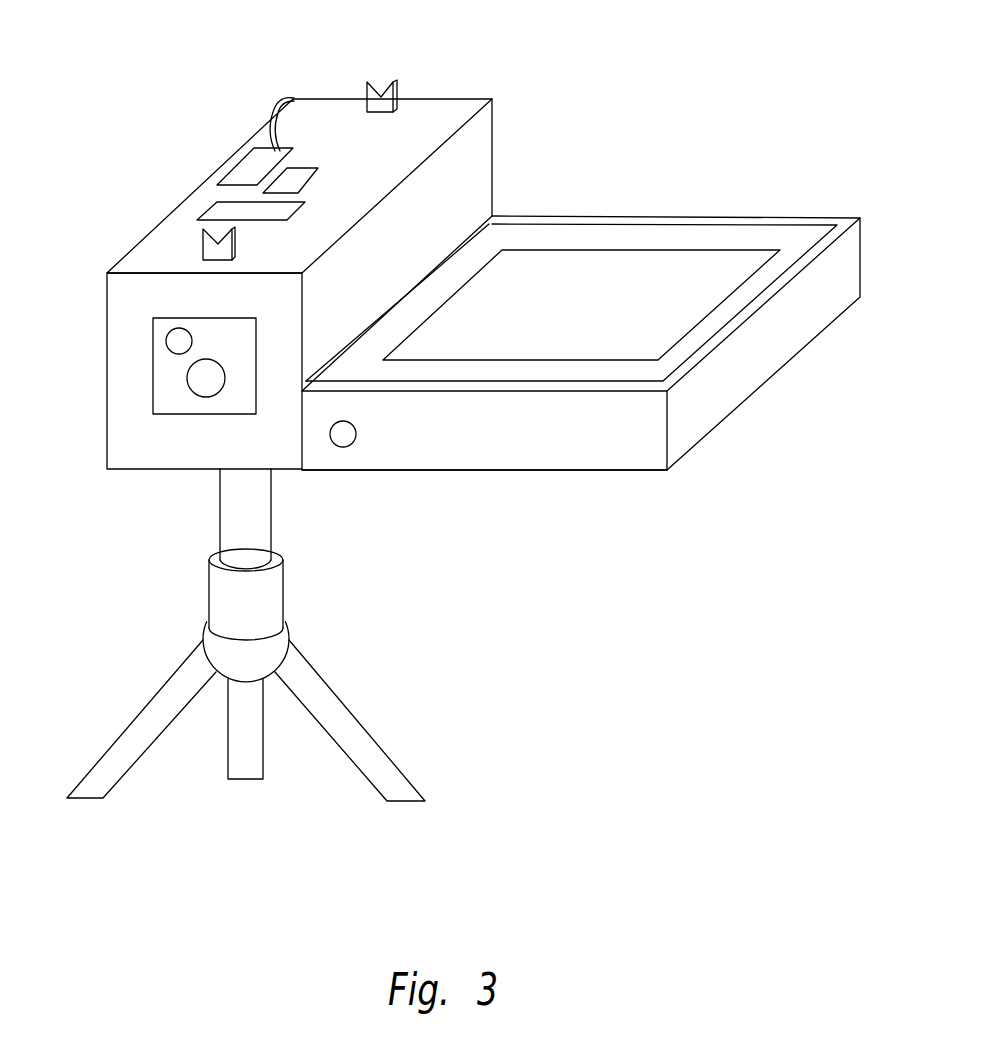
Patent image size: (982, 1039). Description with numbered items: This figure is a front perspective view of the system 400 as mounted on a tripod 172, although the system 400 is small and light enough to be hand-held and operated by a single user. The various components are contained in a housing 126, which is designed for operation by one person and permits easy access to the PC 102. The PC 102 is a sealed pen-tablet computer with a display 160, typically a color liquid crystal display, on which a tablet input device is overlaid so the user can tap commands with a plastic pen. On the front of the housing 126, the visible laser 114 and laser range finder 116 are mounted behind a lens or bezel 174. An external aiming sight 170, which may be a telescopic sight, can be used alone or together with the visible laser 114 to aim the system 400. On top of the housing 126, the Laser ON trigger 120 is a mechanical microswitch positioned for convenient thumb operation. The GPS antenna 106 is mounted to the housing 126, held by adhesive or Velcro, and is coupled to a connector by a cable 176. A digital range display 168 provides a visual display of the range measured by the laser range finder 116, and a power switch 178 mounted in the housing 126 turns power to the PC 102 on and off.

The system 400 is at (397, 412).
The PC 102 is at (581, 315).
The display 160 is at (581, 260).
The housing 126 is at (484, 508).
The GPS antenna 106 is at (251, 138).
The Laser ON trigger 120 is at (306, 123).
The digital range display 168 is at (216, 198).
The external aiming sight 170 is at (249, 137).
The cable 176 is at (284, 87).
The lens or bezel 174 is at (154, 371).
The visible laser 114 is at (122, 335).
The laser range finder 116 is at (137, 376).
The power switch 178 is at (356, 484).
The tripod 172 is at (238, 635).